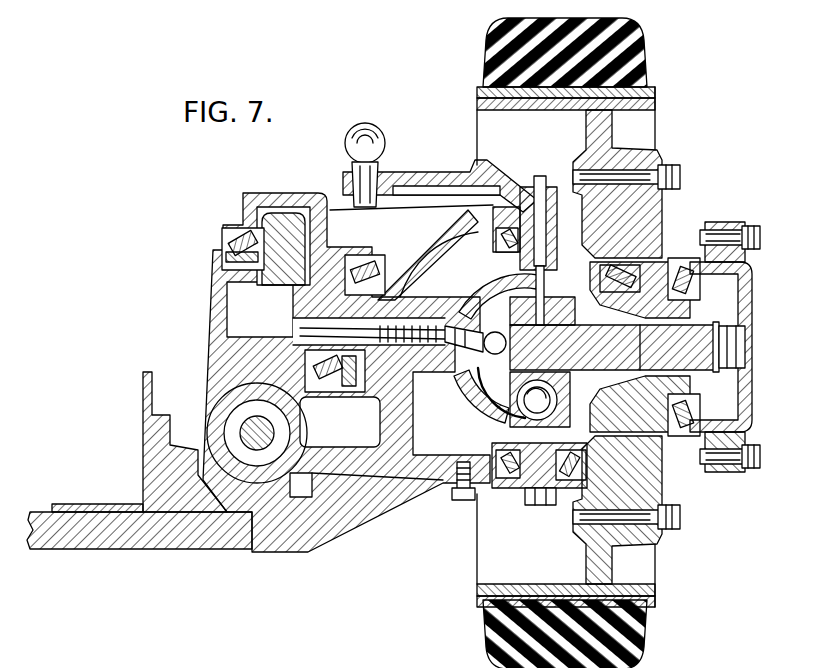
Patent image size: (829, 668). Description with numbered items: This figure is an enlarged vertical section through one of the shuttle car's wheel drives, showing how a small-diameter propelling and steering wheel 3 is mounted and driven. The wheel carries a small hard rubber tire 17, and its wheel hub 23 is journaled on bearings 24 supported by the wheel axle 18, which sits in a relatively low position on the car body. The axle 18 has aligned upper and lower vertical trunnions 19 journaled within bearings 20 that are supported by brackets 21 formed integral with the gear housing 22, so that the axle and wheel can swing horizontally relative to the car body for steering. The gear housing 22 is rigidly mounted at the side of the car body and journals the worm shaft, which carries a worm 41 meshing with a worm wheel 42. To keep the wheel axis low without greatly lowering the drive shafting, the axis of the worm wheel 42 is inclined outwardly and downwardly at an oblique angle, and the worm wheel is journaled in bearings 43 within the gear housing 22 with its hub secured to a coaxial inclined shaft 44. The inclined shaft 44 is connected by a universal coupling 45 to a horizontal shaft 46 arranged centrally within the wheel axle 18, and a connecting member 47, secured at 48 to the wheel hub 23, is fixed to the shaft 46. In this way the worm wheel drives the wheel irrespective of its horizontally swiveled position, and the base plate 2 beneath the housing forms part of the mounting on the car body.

The base plate 2 is at (97, 538).
The propelling and steering wheel 3 is at (652, 123).
The hard rubber tire 17 is at (643, 640).
The wheel axle 18 is at (673, 287).
The vertical trunnions 19 is at (530, 198).
The bearings 20 is at (586, 225).
The brackets 21 is at (478, 492).
The gear housing 22 is at (213, 420).
The wheel hub 23 is at (633, 247).
The bearings 24 is at (697, 415).
The worm 41 is at (248, 455).
The worm wheel 42 is at (274, 213).
The bearings 43 is at (224, 249).
The inclined shaft 44 is at (379, 305).
The universal coupling 45 is at (533, 398).
The horizontal shaft 46 is at (700, 348).
The connecting member 47 is at (743, 298).
The securing point 48 is at (742, 224).